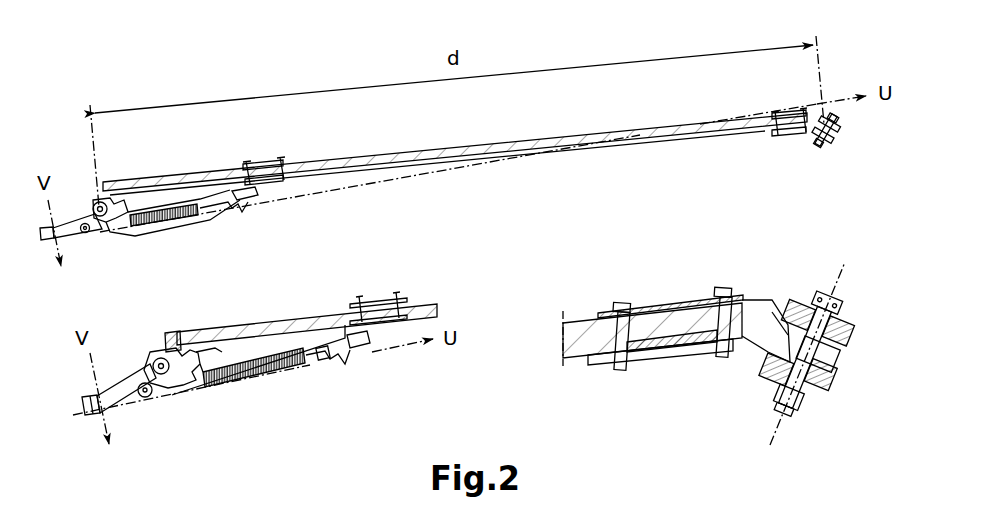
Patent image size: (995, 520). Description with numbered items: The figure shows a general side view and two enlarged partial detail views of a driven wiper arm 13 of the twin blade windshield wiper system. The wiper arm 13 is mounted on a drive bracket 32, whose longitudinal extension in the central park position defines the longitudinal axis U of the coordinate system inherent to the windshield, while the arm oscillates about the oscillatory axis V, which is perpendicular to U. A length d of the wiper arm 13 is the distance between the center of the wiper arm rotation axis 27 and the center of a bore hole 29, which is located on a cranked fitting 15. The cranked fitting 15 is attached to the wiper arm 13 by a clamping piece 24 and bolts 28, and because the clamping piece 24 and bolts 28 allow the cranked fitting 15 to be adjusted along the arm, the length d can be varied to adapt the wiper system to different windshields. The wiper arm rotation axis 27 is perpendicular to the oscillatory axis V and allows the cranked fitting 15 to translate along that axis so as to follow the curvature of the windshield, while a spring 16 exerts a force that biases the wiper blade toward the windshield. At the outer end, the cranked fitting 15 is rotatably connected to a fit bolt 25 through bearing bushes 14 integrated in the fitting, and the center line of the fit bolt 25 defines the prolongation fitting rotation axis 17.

The wiper arm 13 is at (453, 158).
The bearing bushes 14 is at (782, 338).
The cranked fitting 15 is at (762, 348).
The spring 16 is at (260, 380).
The prolongation fitting rotation axis 17 is at (848, 268).
The clamping piece 24 is at (652, 330).
The fit bolt 25 is at (822, 298).
The wiper arm rotation axis 27 is at (104, 215).
The bolts 28 is at (582, 330).
The bore hole 29 is at (840, 128).
The drive bracket 32 is at (125, 372).